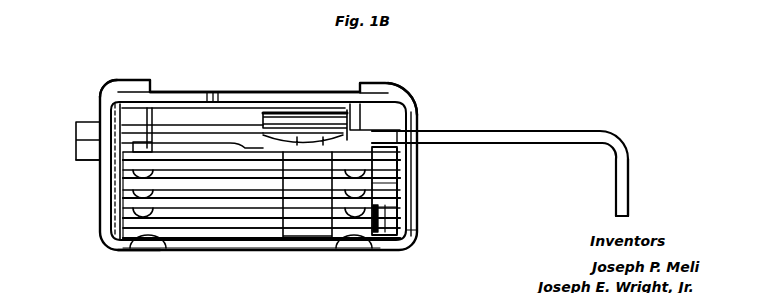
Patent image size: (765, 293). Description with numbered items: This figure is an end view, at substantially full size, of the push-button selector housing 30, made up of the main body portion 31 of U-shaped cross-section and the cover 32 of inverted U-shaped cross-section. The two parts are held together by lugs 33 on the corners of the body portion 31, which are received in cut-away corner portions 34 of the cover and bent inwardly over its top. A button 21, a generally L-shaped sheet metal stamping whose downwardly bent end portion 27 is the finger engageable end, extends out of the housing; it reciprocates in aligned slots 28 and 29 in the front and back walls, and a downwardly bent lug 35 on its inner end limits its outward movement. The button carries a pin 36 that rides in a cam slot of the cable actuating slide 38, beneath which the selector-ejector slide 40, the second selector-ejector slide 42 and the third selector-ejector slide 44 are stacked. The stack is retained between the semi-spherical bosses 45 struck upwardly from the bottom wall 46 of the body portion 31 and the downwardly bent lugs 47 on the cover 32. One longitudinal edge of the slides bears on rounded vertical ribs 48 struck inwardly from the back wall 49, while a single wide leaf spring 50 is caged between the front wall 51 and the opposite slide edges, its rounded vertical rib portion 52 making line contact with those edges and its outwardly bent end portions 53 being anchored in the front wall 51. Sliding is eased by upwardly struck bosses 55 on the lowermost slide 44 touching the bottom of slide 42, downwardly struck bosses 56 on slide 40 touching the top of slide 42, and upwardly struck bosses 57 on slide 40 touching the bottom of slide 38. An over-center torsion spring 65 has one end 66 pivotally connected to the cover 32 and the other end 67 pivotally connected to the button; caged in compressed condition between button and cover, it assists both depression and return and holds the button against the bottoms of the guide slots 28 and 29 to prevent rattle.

The Park button 21 is at (629, 168).
The downwardly bent end portion 27 is at (630, 208).
The slot 28 is at (398, 130).
The slot 29 is at (100, 121).
The housing 30 is at (377, 191).
The main body portion 31 is at (262, 250).
The cover 32 is at (260, 91).
The lug 33 is at (132, 82).
The cut-away corner portion 34 is at (109, 80).
The downwardly bent lug 35 is at (82, 161).
The pin 36 is at (318, 238).
The cable actuating slide 38 is at (163, 160).
The selector-ejector slide 40 is at (134, 178).
The second selector-ejector slide 42 is at (122, 214).
The third selector-ejector slide 44 is at (207, 226).
The semi-spherical boss 45 is at (143, 243).
The bottom wall 46 is at (228, 253).
The downwardly bent lug 47 is at (152, 118).
The rounded vertical rib 48 is at (122, 241).
The back wall 49 is at (128, 184).
The leaf spring 50 is at (388, 214).
The front wall 51 is at (374, 161).
The rounded vertical rib portion 52 is at (386, 233).
The outwardly bent end portion 53 is at (412, 230).
The semi-spherical boss 55 is at (373, 208).
The boss 56 is at (375, 184).
The boss 57 is at (410, 147).
The over-center torsion spring 65 is at (300, 113).
The spring end 66 is at (215, 93).
The spring end 67 is at (262, 146).